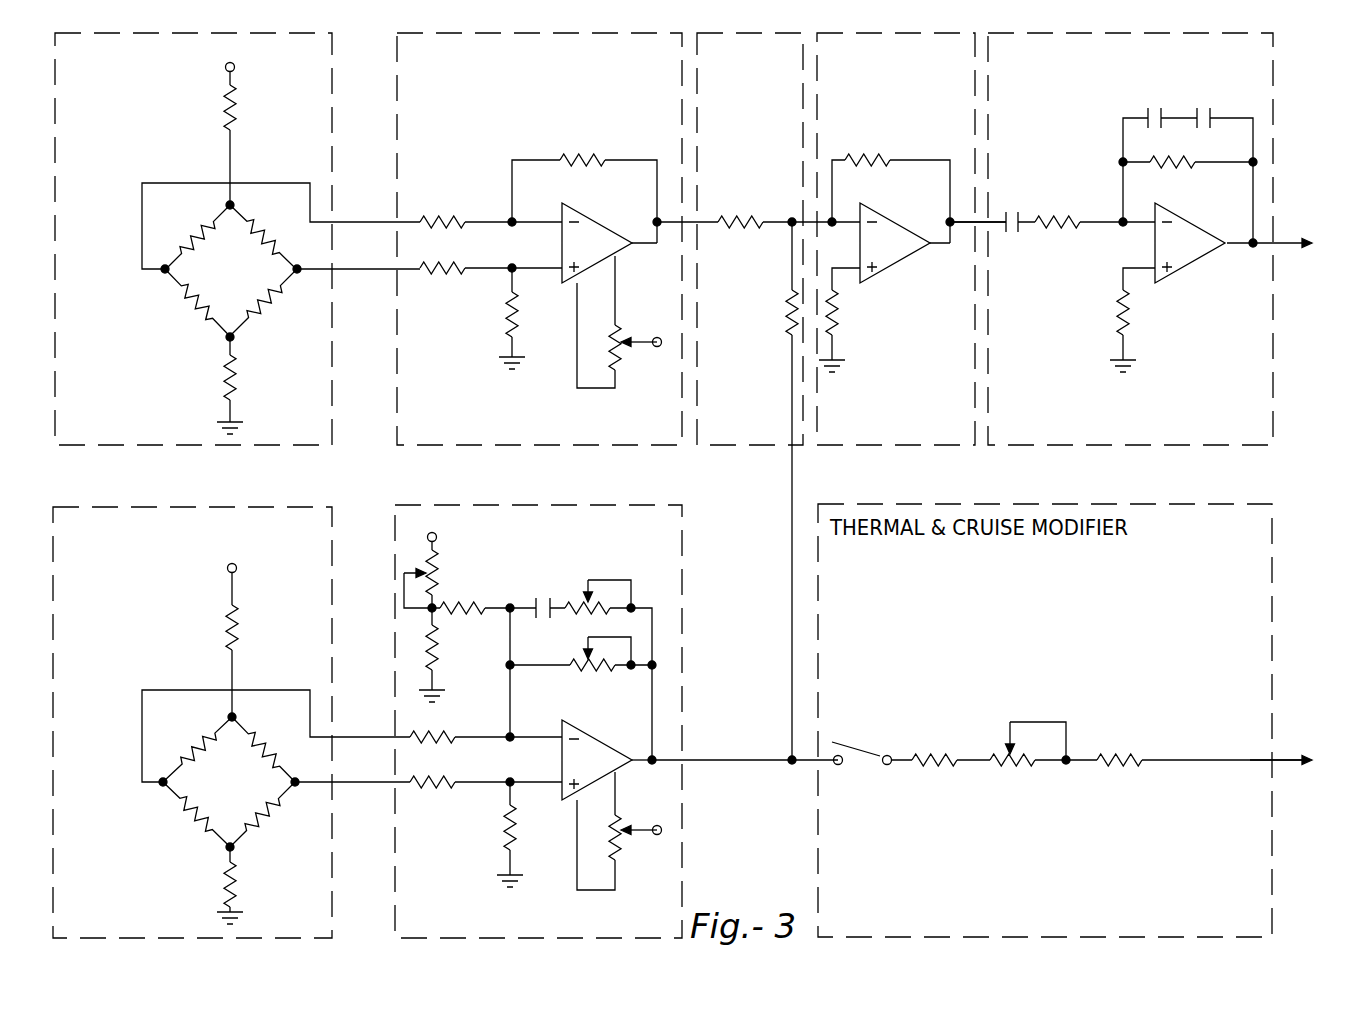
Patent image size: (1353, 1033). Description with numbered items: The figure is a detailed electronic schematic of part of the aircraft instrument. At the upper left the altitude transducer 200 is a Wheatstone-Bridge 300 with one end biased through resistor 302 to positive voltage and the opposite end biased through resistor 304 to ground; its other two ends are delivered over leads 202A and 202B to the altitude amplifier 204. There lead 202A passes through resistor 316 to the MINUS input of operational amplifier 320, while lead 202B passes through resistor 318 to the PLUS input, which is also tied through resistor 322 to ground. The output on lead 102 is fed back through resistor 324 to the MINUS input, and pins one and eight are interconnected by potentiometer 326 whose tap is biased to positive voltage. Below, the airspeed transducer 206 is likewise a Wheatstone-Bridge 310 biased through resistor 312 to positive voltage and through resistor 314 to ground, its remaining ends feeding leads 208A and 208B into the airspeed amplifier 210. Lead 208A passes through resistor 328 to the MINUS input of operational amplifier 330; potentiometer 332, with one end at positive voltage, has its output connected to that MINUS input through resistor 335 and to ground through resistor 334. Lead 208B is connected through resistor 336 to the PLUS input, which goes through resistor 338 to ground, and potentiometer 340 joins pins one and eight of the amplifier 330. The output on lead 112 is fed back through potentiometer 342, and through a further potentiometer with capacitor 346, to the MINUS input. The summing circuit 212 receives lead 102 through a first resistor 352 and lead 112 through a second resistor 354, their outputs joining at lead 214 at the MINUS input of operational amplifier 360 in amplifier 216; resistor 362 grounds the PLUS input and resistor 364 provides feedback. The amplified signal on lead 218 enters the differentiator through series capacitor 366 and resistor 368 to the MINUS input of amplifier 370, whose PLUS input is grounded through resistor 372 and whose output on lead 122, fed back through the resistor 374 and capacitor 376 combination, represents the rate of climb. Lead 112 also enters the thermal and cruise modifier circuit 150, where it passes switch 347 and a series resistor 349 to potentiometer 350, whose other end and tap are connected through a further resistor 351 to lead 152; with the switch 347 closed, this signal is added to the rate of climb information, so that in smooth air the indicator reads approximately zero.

The altitude transducer 200 is at (57, 447).
The resistor 302 is at (232, 117).
The Wheatstone-Bridge 300 is at (200, 312).
The resistor 304 is at (228, 385).
The lead 202A is at (314, 165).
The lead 202B is at (317, 272).
The altitude amplifier 204 is at (470, 448).
The resistor 316 is at (470, 215).
The resistor 318 is at (467, 272).
The operational amplifier 320 is at (618, 200).
The resistor 324 is at (612, 142).
The resistor 322 is at (518, 314).
The potentiometer 326 is at (623, 357).
The lead 102 is at (670, 228).
The summing circuit 212 is at (738, 448).
The first resistor 352 is at (752, 210).
The lead 214 is at (792, 216).
The second resistor 354 is at (786, 312).
The lead 112 is at (790, 552).
The amplifier 216 is at (888, 448).
The resistor 364 is at (852, 158).
The operational amplifier 360 is at (890, 255).
The resistor 362 is at (843, 310).
The thermal and cruise modifier circuit 150 is at (930, 497).
The lead 218 is at (996, 220).
The capacitor 366 is at (1009, 233).
The resistor 368 is at (1062, 200).
The resistor 374 is at (1177, 168).
The capacitor 376 is at (1198, 114).
The operational amplifier 370 is at (1197, 256).
The resistor 372 is at (1130, 322).
The lead 122 is at (1270, 243).
The airspeed transducer 206 is at (238, 500).
The resistor 312 is at (228, 630).
The Wheatstone-Bridge 310 is at (197, 826).
The resistor 314 is at (226, 883).
The lead 208A is at (282, 666).
The lead 208B is at (317, 786).
The airspeed amplifier 210 is at (560, 500).
The potentiometer 332 is at (434, 584).
The resistor 335 is at (470, 606).
The capacitor 346 is at (552, 597).
The resistor 334 is at (612, 598).
The potentiometer 342 is at (610, 673).
The resistor 328 is at (465, 712).
The resistor 336 is at (420, 786).
The resistor 338 is at (505, 836).
The operational amplifier 330 is at (622, 724).
The potentiometer 340 is at (621, 843).
The switch 347 is at (870, 747).
The resistor 349 is at (938, 766).
The potentiometer 350 is at (1016, 767).
The resistor 351 is at (1122, 768).
The lead 152 is at (1286, 758).